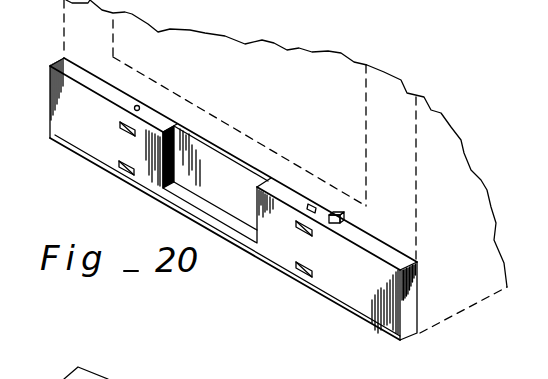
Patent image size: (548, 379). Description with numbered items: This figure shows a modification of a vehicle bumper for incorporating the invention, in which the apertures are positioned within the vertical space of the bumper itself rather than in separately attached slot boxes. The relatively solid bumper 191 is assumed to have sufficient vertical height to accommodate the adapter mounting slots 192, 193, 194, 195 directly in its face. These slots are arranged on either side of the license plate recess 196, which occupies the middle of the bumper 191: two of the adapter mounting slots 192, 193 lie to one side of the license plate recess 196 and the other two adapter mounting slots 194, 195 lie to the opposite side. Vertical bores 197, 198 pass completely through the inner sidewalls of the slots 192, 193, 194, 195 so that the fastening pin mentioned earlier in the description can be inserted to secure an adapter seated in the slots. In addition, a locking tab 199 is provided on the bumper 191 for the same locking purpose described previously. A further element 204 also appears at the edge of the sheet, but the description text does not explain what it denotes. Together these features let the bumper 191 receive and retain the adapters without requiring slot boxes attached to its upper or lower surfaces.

The bumper 191 is at (95, 148).
The adapter mounting slot 192 is at (119, 126).
The adapter mounting slot 193 is at (123, 175).
The adapter mounting slot 194 is at (310, 236).
The adapter mounting slot 195 is at (302, 279).
The license plate recess 196 is at (207, 163).
The vertical bore 197 is at (137, 106).
The vertical bore 198 is at (311, 207).
The locking tab 199 is at (338, 211).
The member 204 is at (77, 378).